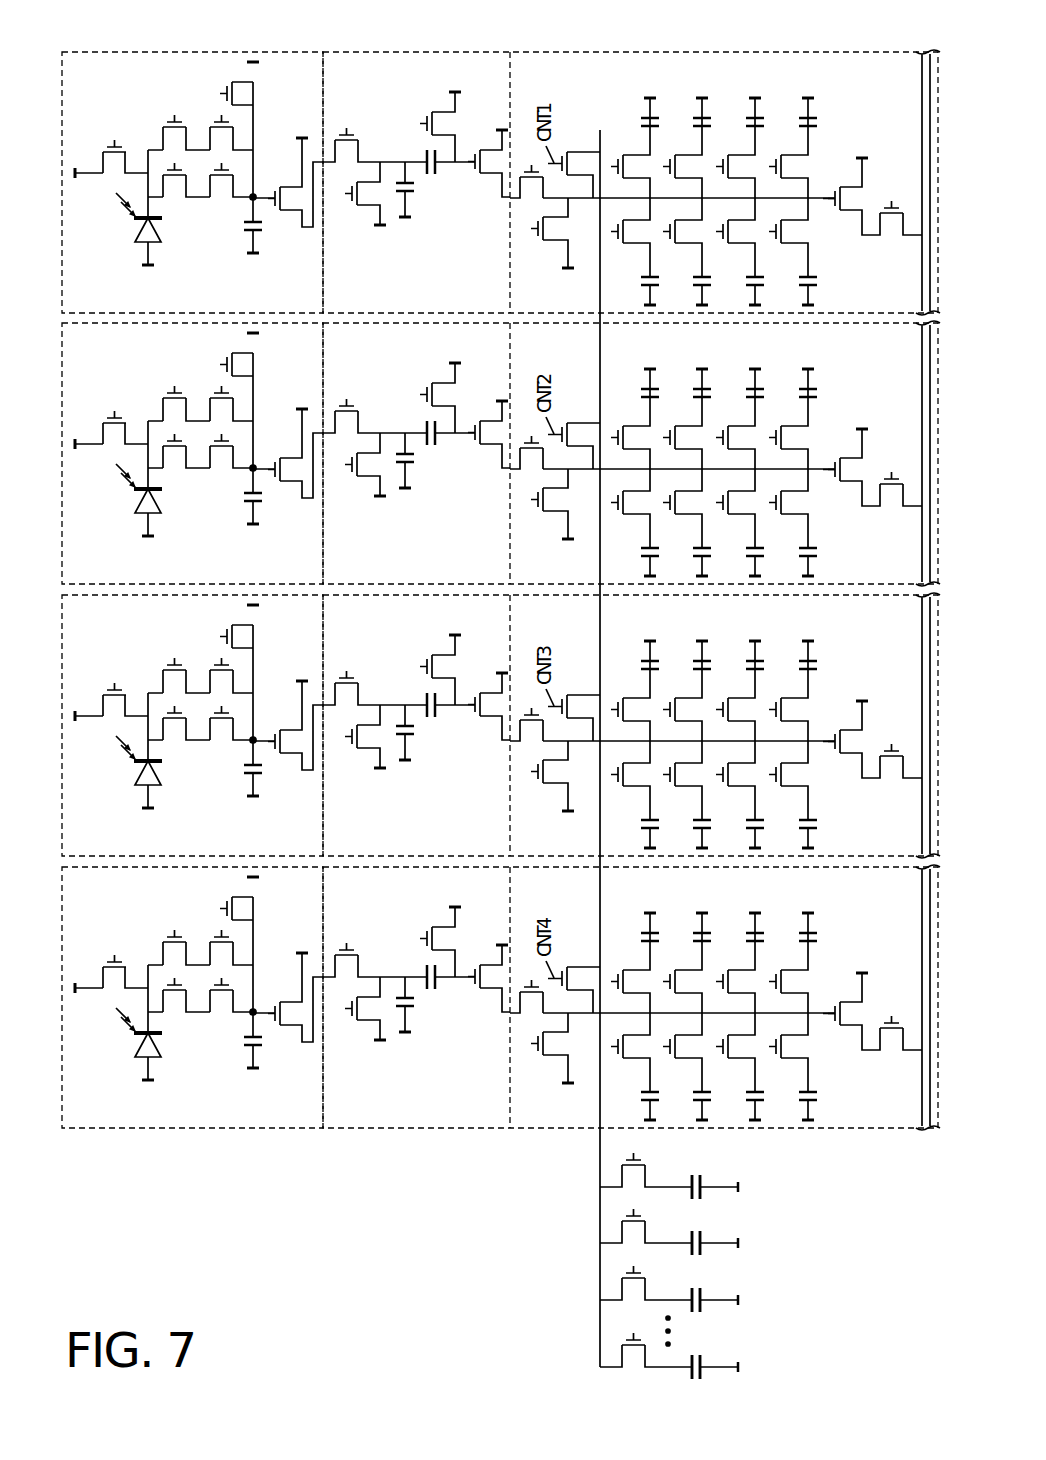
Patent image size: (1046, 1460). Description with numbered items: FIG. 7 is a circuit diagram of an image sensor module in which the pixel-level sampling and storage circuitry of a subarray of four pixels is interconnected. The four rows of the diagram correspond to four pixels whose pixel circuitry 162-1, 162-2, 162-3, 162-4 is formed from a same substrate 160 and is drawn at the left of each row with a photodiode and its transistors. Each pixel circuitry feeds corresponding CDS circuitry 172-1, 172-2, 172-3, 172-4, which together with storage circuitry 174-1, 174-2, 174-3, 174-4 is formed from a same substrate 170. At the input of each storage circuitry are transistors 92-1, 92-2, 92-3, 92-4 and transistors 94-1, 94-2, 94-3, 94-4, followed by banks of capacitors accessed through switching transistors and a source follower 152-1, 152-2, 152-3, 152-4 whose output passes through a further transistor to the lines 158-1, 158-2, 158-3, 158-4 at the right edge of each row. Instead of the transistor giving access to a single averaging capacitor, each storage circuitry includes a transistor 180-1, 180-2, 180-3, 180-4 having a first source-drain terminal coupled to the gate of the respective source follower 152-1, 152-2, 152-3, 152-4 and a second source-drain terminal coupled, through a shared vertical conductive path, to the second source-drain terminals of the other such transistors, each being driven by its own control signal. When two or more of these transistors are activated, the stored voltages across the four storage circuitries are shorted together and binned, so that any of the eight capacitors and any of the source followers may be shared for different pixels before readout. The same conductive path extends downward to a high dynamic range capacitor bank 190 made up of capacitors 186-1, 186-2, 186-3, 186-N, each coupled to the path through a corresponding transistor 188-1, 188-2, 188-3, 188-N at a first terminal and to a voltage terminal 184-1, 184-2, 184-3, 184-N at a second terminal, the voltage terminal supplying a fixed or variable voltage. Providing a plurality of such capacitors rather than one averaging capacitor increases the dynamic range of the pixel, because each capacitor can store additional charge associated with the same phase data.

The substrate 160 is at (208, 42).
The substrate 170 is at (466, 42).
The pixel circuitry 162-1 is at (199, 163).
The pixel circuitry 162-2 is at (199, 434).
The pixel circuitry 162-3 is at (199, 706).
The pixel circuitry 162-4 is at (199, 978).
The CDS circuitry 172-1 is at (416, 143).
The CDS circuitry 172-2 is at (416, 414).
The CDS circuitry 172-3 is at (416, 686).
The CDS circuitry 172-4 is at (416, 958).
The storage circuitry 174-1 is at (689, 183).
The storage circuitry 174-2 is at (689, 454).
The storage circuitry 174-3 is at (689, 726).
The storage circuitry 174-4 is at (689, 998).
The transistor 180-1 is at (566, 150).
The transistor 180-2 is at (579, 420).
The transistor 180-3 is at (579, 692).
The transistor 180-4 is at (579, 964).
The input transistor 92-1 is at (532, 203).
The input transistor 92-2 is at (505, 484).
The input transistor 92-3 is at (505, 756).
The input transistor 92-4 is at (505, 1028).
The reset transistor 94-1 is at (547, 245).
The reset transistor 94-2 is at (548, 510).
The reset transistor 94-3 is at (548, 782).
The reset transistor 94-4 is at (548, 1054).
The source follower transistor 152-1 is at (842, 212).
The source follower transistor 152-2 is at (869, 482).
The source follower transistor 152-3 is at (869, 754).
The source follower transistor 152-4 is at (869, 1026).
The output line 158-1 is at (920, 104).
The output line 158-2 is at (890, 453).
The output line 158-3 is at (890, 725).
The output line 158-4 is at (890, 997).
The transistor 188-1 is at (636, 1178).
The transistor 188-2 is at (636, 1234).
The transistor 188-3 is at (636, 1291).
The transistor 188-N is at (636, 1358).
The capacitor 186-1 is at (727, 1176).
The capacitor 186-2 is at (727, 1232).
The capacitor 186-3 is at (727, 1289).
The capacitor 186-N is at (730, 1356).
The terminal 184-1 is at (761, 1187).
The terminal 184-2 is at (761, 1243).
The terminal 184-3 is at (761, 1300).
The terminal 184-N is at (764, 1367).
The high dynamic range capacitor bank 190 is at (600, 1256).